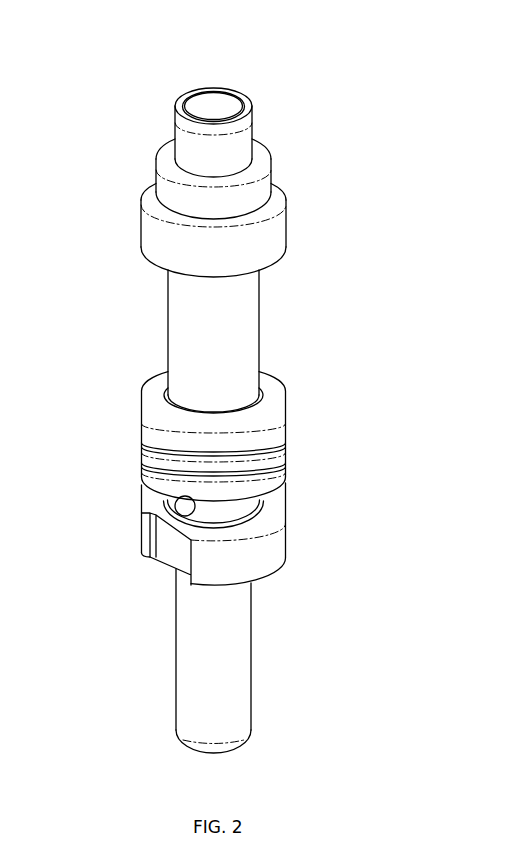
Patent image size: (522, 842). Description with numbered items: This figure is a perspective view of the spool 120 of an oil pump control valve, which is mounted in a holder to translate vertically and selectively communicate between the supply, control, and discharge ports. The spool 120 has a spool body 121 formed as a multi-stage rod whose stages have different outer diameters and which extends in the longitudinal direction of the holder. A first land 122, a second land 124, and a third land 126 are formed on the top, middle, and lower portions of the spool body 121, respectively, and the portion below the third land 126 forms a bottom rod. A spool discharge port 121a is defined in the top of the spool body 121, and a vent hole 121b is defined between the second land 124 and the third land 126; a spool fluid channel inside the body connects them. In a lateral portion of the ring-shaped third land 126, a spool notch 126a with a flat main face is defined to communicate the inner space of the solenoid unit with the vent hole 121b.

The spool 120 is at (287, 71).
The spool body 121 is at (246, 329).
The spool discharge port 121a is at (213, 108).
The vent hole 121b is at (173, 508).
The first land 122 is at (283, 222).
The second land 124 is at (284, 420).
The third land 126 is at (286, 538).
The spool notch 126a is at (178, 548).